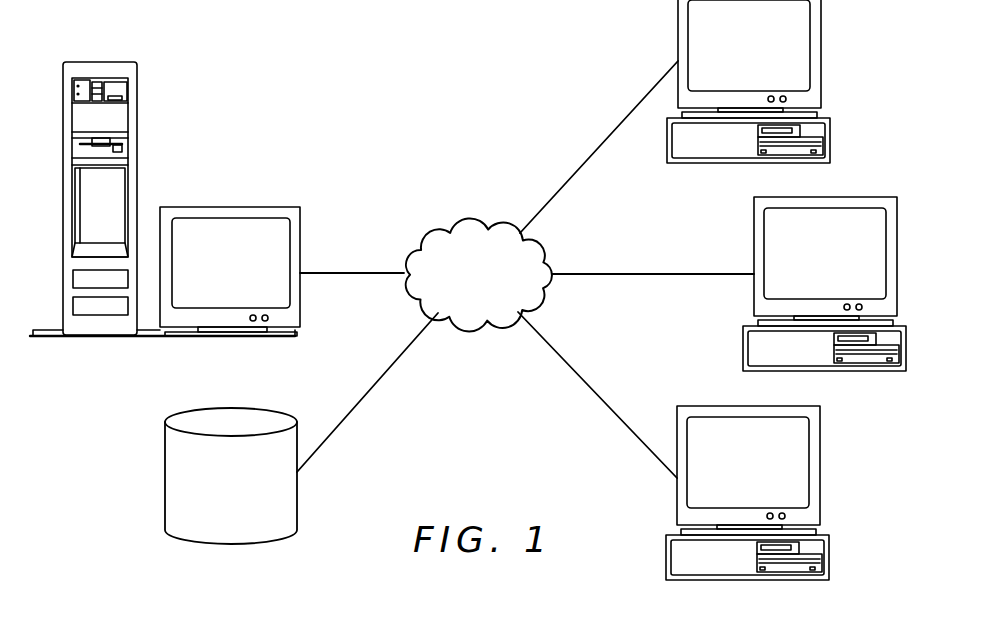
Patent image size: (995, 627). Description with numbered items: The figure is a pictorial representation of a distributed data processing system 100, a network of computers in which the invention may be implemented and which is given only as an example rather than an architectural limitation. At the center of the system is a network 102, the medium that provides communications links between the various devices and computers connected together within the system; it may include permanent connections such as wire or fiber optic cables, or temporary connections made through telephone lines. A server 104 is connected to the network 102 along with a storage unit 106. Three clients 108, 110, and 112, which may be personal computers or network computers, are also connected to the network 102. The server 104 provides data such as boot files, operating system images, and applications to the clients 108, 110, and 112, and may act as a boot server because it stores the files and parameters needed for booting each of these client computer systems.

The distributed data processing system 100 is at (352, 74).
The network 102 is at (458, 287).
The server 104 is at (210, 274).
The storage unit 106 is at (212, 496).
The client 108 is at (730, 61).
The client 110 is at (805, 269).
The client 112 is at (729, 477).